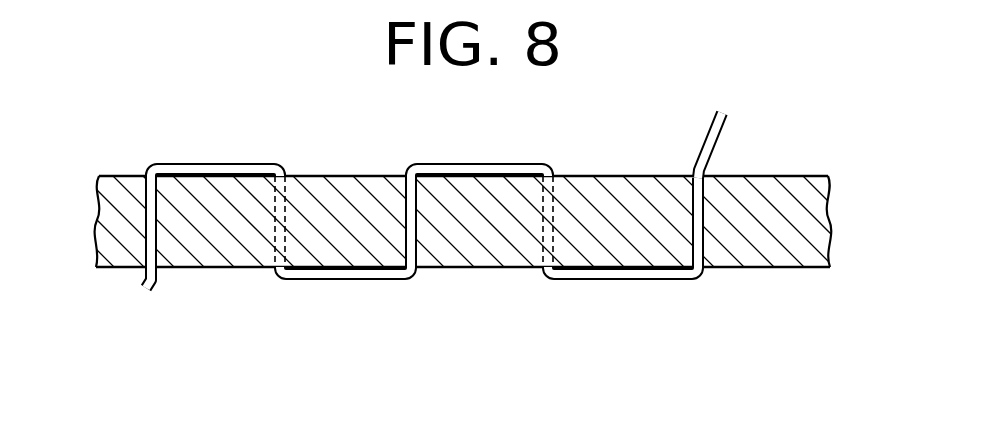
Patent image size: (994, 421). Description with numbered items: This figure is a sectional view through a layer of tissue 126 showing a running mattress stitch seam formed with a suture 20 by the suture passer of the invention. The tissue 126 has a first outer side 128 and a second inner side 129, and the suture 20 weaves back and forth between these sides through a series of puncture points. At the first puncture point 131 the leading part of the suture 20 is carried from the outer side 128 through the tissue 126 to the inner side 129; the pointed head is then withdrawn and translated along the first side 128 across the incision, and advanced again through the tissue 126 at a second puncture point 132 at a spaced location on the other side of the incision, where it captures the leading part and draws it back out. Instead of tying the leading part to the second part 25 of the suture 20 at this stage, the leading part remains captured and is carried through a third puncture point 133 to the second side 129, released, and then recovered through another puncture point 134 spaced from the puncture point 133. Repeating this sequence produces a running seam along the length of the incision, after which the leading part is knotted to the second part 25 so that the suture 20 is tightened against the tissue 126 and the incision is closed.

The suture 20 is at (602, 280).
The second part of the suture 25 is at (722, 132).
The tissue 126 is at (765, 255).
The first outer side of the tissue 128 is at (121, 176).
The second inner side of the tissue 129 is at (119, 268).
The puncture point 131 is at (695, 175).
The second puncture point 132 is at (549, 175).
The third puncture point 133 is at (407, 174).
The another puncture point 134 is at (283, 175).